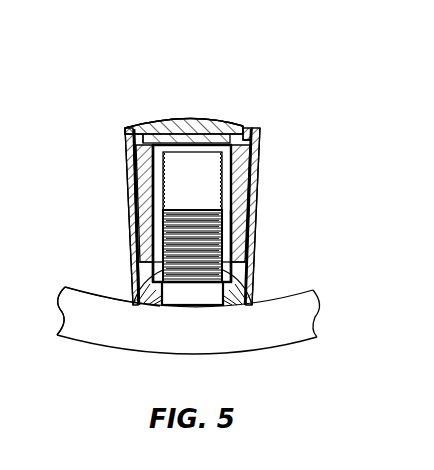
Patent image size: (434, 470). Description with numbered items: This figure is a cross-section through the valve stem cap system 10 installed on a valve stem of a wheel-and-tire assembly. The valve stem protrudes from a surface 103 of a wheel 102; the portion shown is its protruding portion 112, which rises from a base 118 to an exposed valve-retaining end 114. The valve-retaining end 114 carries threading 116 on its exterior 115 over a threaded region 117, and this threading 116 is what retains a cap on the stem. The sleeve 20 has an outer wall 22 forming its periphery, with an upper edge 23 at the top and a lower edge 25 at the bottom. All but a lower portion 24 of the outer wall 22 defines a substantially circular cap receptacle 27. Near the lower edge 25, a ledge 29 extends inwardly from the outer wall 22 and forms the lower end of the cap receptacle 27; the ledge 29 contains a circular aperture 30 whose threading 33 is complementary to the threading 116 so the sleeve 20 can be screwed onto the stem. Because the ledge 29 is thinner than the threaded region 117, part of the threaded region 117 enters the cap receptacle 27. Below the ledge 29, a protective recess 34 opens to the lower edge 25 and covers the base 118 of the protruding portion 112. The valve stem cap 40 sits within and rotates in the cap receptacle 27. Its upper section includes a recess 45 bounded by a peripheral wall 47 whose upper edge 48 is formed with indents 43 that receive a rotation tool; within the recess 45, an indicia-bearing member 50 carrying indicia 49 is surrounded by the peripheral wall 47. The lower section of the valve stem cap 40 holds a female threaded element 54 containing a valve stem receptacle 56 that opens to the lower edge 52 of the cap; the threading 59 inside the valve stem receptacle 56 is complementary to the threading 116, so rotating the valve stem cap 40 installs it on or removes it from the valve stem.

The valve stem cap system 10 is at (119, 62).
The sleeve 20 is at (272, 266).
The outer wall 22 is at (264, 140).
The upper edge 23 is at (261, 128).
The lower portion 24 is at (235, 290).
The lower edge 25 is at (230, 300).
The cap receptacle 27 is at (132, 157).
The ledge 29 is at (57, 333).
The aperture 30 is at (133, 263).
The threading 33 is at (160, 267).
The protective recess 34 is at (152, 274).
The valve stem cap 40 is at (209, 104).
The indents 43 is at (143, 128).
The recess 45 is at (228, 128).
The peripheral wall 47 is at (130, 132).
The upper edge 48 is at (146, 126).
The indicia 49 is at (187, 127).
The indicia-bearing member 50 is at (191, 120).
The lower edge 52 is at (252, 305).
The female threaded element 54 is at (258, 167).
The valve stem receptacle 56 is at (182, 193).
The threading 59 is at (142, 202).
The wheel 102 is at (300, 318).
The surface 103 is at (88, 287).
The protruding portion 112 is at (178, 315).
The valve-retaining end 114 is at (256, 203).
The exterior 115 is at (252, 224).
The threading 116 is at (253, 255).
The threaded region 117 is at (147, 226).
The base 118 is at (196, 298).